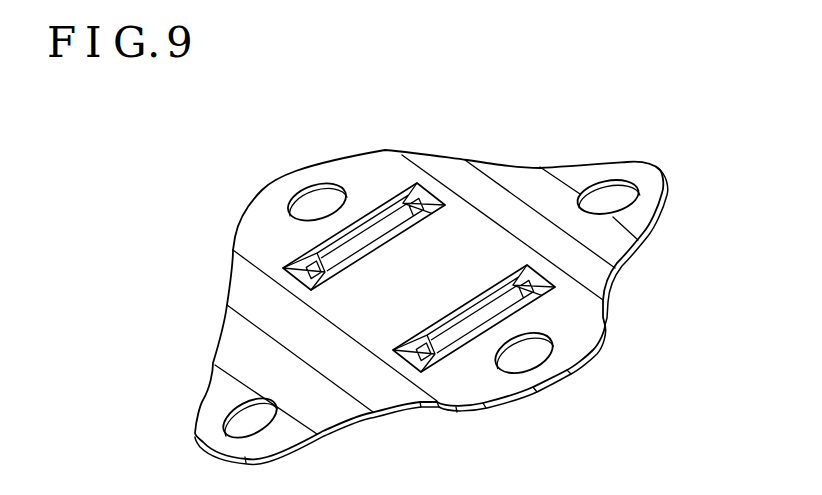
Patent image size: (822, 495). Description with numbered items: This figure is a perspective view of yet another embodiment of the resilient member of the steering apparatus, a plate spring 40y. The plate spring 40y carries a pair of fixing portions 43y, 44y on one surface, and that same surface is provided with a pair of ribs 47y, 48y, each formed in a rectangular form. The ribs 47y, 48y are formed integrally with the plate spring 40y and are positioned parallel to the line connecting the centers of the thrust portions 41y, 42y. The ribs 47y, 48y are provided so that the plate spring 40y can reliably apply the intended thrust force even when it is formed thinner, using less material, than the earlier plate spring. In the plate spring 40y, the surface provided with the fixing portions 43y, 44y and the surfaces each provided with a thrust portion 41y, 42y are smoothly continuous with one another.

The plate spring 40y is at (371, 143).
The thrust portion 41y is at (635, 187).
The thrust portion 42y is at (204, 451).
The fixing portion 43y is at (303, 184).
The fixing portion 44y is at (533, 368).
The rib 47y is at (305, 256).
The rib 48y is at (450, 343).